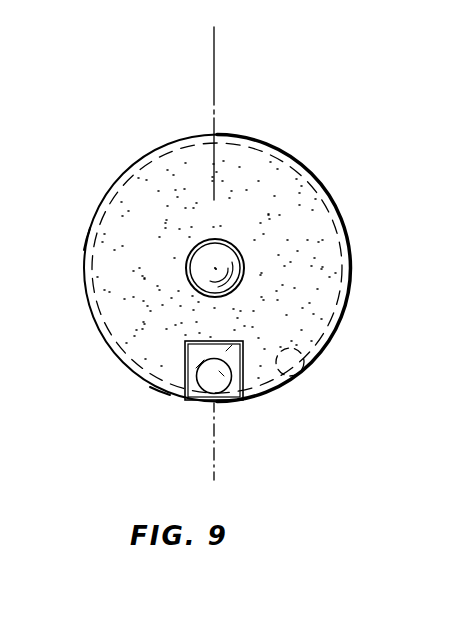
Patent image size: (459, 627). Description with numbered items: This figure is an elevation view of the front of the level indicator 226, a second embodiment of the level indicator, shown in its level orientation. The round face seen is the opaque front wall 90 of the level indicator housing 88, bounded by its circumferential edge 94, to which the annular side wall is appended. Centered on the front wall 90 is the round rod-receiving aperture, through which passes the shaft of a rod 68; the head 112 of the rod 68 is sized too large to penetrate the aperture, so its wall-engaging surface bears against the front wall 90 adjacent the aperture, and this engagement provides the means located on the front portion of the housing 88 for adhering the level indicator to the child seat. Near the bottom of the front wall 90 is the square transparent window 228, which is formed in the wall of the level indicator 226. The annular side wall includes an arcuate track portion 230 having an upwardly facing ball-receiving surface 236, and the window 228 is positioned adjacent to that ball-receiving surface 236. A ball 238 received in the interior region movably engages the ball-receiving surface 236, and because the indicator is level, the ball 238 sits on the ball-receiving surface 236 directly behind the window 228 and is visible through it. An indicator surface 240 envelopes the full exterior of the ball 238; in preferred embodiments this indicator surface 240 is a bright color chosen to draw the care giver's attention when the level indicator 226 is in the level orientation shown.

The level indicator housing 88 is at (266, 141).
The level indicator 226 is at (139, 126).
The front wall 90 is at (115, 200).
The circumferential edge 94 is at (92, 214).
The head 112 is at (202, 258).
The rod 68 is at (218, 256).
The transparent window 228 is at (230, 353).
The ball 238 is at (220, 378).
The indicator surface 240 is at (197, 370).
The arcuate track portion 230 is at (162, 388).
The ball-receiving surface 236 is at (296, 356).